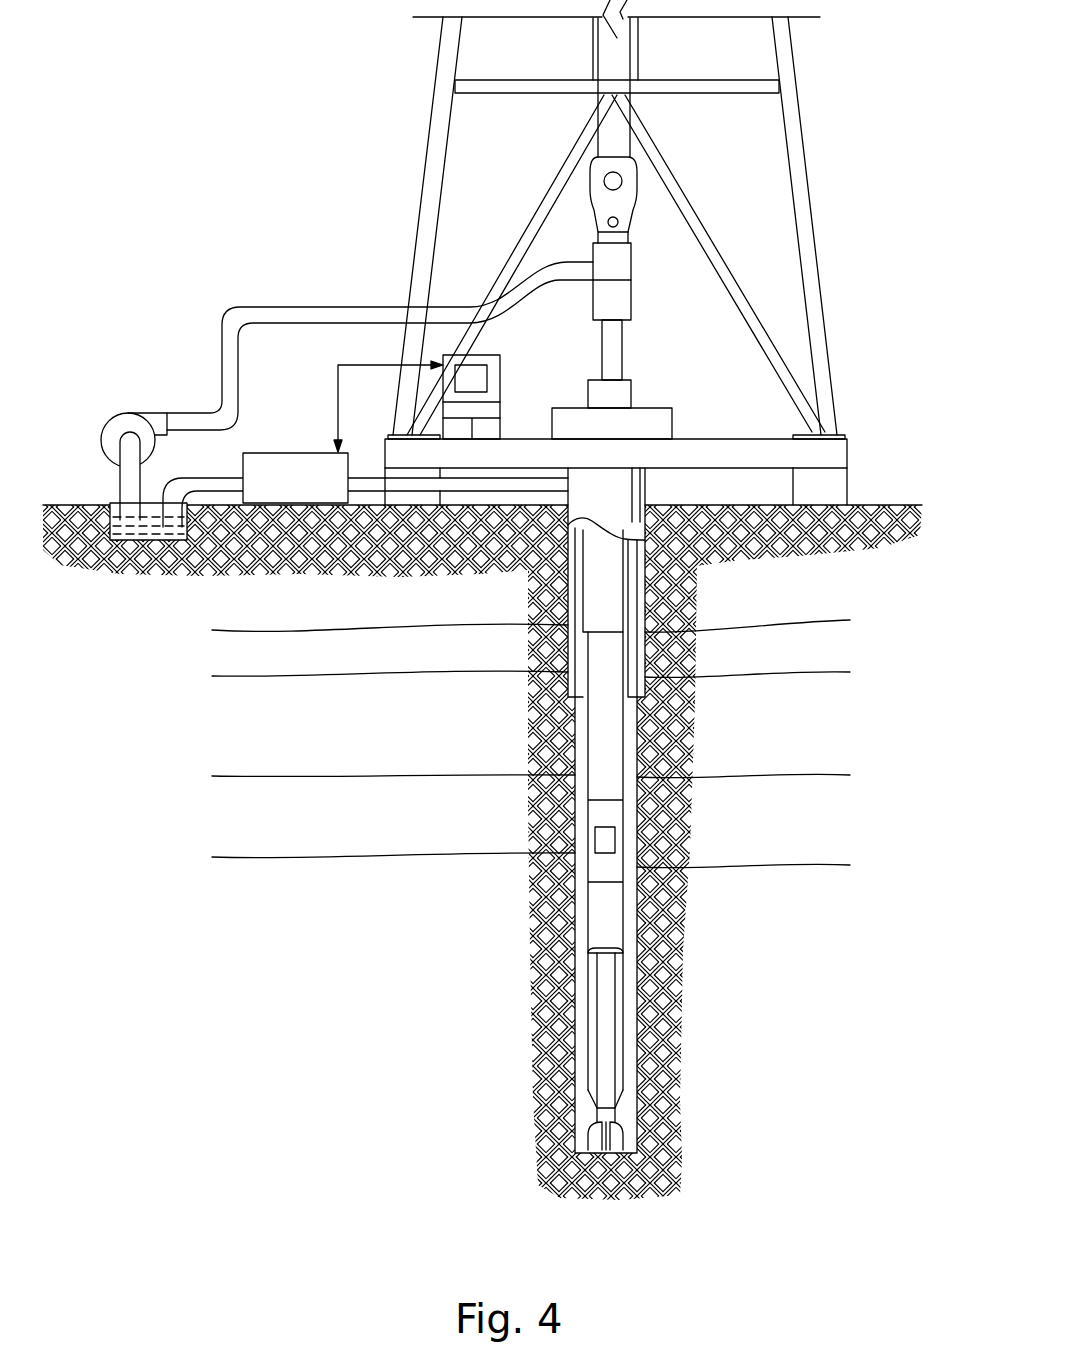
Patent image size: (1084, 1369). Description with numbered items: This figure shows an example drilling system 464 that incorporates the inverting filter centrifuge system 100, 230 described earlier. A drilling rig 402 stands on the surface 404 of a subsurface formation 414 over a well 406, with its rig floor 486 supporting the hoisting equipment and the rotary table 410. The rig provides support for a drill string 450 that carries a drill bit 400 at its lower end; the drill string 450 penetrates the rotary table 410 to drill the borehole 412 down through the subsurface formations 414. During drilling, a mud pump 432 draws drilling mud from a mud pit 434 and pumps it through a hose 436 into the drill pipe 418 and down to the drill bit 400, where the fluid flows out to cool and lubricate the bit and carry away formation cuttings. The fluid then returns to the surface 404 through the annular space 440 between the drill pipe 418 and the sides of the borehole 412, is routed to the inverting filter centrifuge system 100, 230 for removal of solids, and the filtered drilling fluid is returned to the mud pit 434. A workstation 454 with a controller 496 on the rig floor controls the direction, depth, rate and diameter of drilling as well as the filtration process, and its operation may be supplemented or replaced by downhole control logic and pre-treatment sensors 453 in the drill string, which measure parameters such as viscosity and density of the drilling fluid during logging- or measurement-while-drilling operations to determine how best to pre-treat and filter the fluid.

The drilling system 464 is at (302, 115).
The drilling rig 402 is at (818, 217).
The hose 436 is at (240, 307).
The mud pump 432 is at (140, 413).
The mud pit 434 is at (133, 537).
The inverting filter centrifuge system 100 is at (343, 432).
The inverting filter centrifuge system 230 is at (275, 452).
The workstation 454 is at (503, 372).
The controller 496 is at (487, 378).
The rotary table 410 is at (575, 407).
The rig floor 486 is at (848, 447).
The surface 404 is at (870, 502).
The well 406 is at (655, 500).
The drill pipe 418 is at (595, 602).
The subsurface formation 414 is at (195, 627).
The annular space 440 is at (632, 740).
The downhole control logic and pre-treatment sensors 453 is at (612, 840).
The borehole 412 is at (635, 977).
The drill string 450 is at (623, 1042).
The drill bit 400 is at (620, 1123).